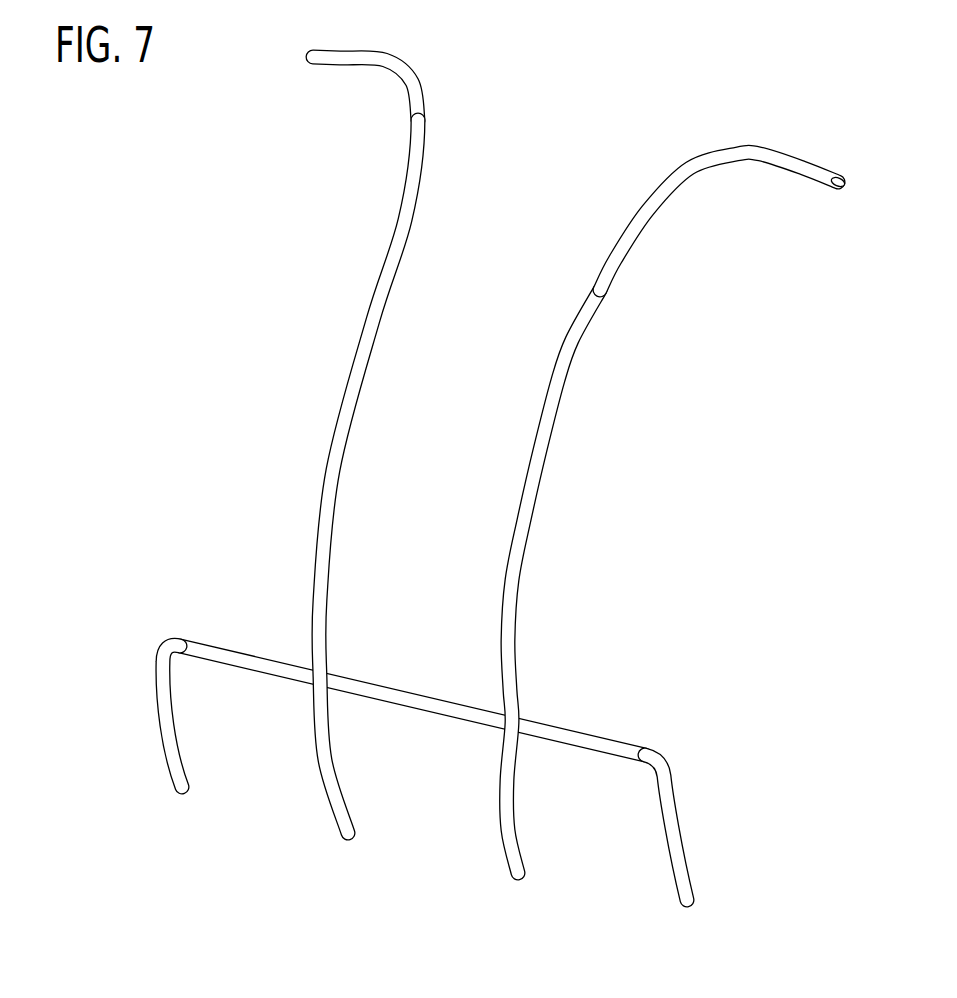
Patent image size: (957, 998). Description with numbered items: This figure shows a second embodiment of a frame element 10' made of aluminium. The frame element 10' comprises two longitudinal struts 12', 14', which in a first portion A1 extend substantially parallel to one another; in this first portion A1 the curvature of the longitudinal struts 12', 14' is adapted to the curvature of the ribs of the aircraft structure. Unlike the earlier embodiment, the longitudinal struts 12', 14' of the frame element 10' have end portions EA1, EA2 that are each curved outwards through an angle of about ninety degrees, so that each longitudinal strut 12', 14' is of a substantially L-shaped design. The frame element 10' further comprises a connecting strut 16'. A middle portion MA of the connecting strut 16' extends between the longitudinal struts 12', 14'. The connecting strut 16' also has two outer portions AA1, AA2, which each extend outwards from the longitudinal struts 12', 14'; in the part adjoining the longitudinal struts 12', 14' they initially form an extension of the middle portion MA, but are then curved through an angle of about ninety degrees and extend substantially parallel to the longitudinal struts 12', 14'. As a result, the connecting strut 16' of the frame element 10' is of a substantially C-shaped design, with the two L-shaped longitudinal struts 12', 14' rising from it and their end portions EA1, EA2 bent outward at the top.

The frame element 10' is at (462, 478).
The longitudinal strut 12' is at (350, 445).
The longitudinal strut 14' is at (694, 473).
The connecting strut 16' is at (412, 700).
The middle portion MA is at (403, 682).
The end portion EA1 is at (345, 73).
The end portion EA2 is at (815, 158).
The outer portion AA1 is at (142, 662).
The outer portion AA2 is at (690, 792).
The first portion A1 is at (557, 533).